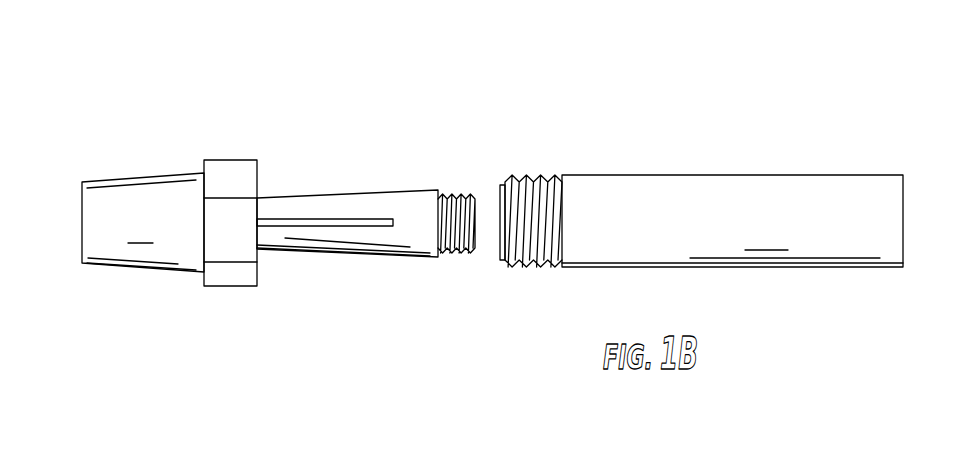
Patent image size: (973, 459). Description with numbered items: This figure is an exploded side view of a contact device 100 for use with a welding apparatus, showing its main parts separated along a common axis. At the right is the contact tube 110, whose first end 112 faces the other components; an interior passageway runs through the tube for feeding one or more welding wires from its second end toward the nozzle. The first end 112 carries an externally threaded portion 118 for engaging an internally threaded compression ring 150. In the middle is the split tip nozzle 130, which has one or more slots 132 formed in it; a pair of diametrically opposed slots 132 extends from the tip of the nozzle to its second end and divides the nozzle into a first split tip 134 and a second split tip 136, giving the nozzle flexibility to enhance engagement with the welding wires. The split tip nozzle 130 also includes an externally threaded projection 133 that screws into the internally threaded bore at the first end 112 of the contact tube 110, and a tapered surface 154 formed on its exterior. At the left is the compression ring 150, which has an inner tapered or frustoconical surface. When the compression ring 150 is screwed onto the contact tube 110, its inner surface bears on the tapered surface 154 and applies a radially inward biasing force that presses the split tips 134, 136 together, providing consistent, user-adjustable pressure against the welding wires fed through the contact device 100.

The contact device 100 is at (147, 54).
The contact tube 110 is at (833, 175).
The first end 112 is at (597, 175).
The externally threaded portion 118 is at (538, 263).
The split tip nozzle 130 is at (408, 191).
The slots 132 is at (363, 227).
The externally threaded projection 133 is at (457, 253).
The first split tip 134 is at (310, 195).
The second split tip 136 is at (293, 250).
The compression ring 150 is at (162, 271).
The tapered surface 154 is at (283, 197).